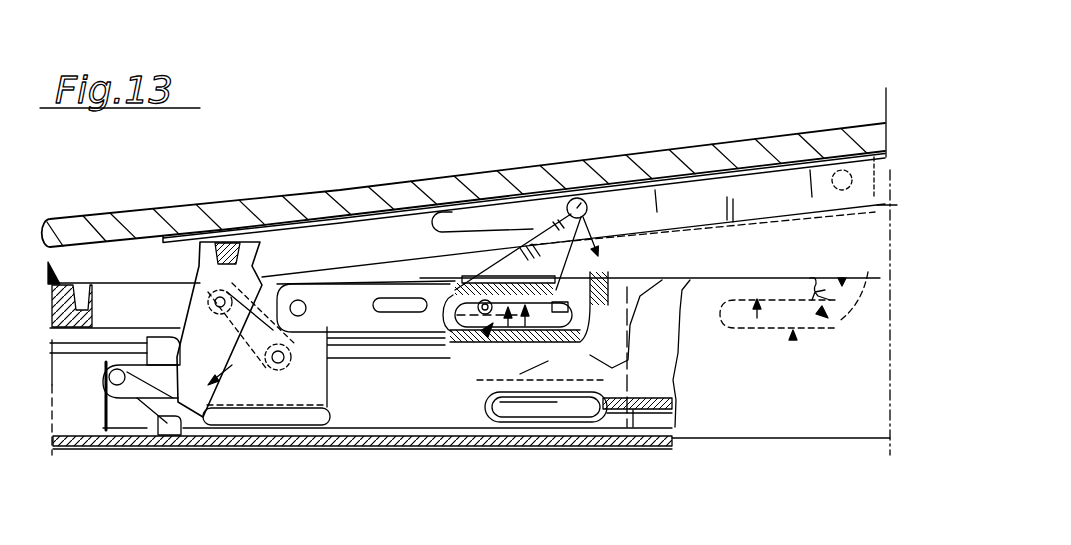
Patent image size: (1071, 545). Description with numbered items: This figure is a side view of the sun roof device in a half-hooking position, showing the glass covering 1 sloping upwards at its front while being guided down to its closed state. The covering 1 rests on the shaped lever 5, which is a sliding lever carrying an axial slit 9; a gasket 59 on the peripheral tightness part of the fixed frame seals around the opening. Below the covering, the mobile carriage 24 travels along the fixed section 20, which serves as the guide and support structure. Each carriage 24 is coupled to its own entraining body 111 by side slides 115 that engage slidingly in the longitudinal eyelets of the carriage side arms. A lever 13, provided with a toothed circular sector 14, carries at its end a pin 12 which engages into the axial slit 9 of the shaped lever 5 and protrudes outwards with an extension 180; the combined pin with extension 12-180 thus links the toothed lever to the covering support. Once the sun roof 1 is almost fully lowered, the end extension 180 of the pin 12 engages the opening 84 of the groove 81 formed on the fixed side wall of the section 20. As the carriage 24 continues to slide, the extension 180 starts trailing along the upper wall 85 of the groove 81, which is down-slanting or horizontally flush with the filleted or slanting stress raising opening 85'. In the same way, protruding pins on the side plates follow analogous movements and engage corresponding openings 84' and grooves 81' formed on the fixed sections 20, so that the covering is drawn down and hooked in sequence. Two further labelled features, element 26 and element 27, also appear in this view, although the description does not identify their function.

The glass covering 1 is at (223, 213).
The shaped lever 5 is at (370, 240).
The axial slit 9 is at (498, 217).
The pin 12 is at (643, 164).
The extension 180 is at (643, 164).
The pin with extension 12-180 is at (588, 190).
The lever 13 is at (560, 262).
The toothed circular sector 14 is at (452, 357).
The fixed section 20 is at (832, 408).
The carriage 24 is at (623, 443).
The strut 26 is at (484, 299).
The stop 27 is at (500, 388).
The gasket 59 is at (60, 270).
The groove 81 is at (422, 428).
The groove 81' is at (778, 399).
The opening 84 is at (539, 400).
The opening 84' is at (839, 275).
The upper wall 85 is at (641, 415).
The stress raising opening 85' is at (695, 419).
The entraining body 111 is at (199, 408).
The side slide 115 is at (293, 417).